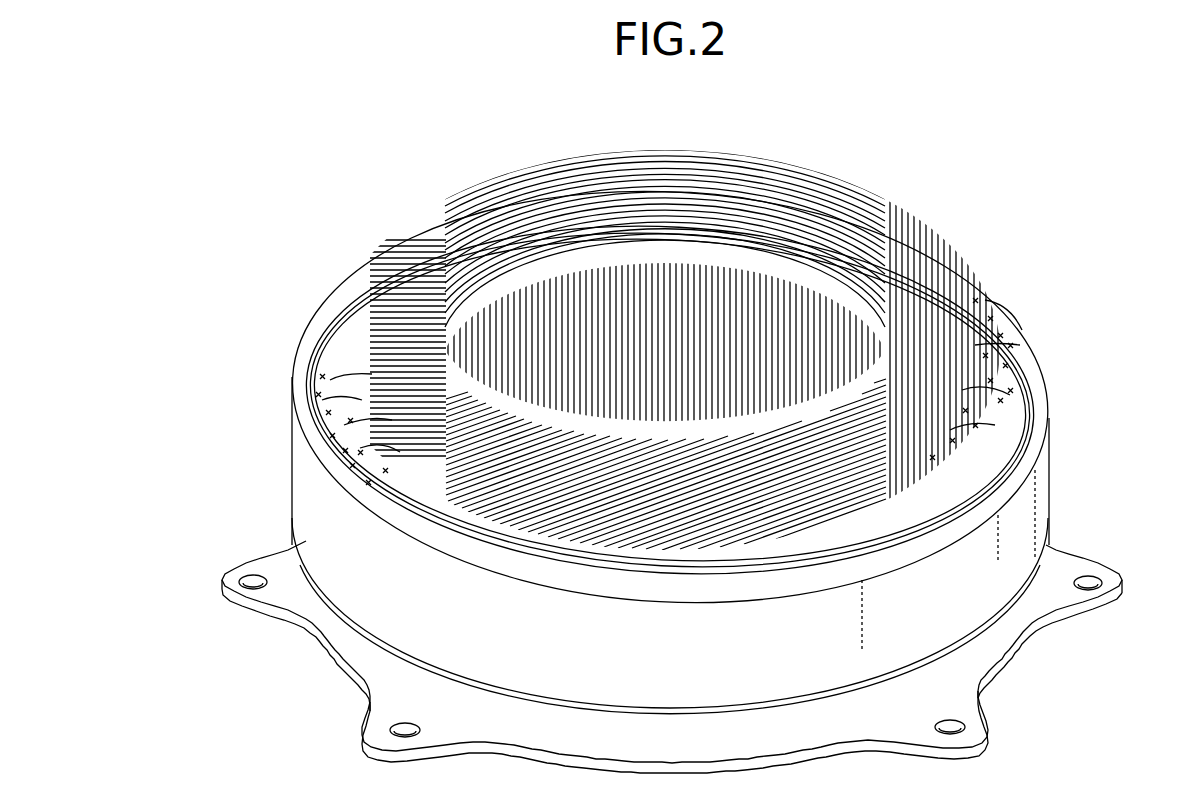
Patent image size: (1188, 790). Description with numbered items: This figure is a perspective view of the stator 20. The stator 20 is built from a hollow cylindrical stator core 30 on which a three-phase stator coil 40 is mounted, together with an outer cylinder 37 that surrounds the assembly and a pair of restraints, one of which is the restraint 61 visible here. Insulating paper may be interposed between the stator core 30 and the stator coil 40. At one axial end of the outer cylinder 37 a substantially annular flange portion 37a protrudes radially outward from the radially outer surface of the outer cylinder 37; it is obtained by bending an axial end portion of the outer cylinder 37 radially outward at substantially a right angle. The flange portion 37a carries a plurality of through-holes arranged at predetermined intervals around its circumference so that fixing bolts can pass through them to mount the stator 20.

The stator 20 is at (998, 193).
The stator core 30 is at (1000, 333).
The stator coil 40 is at (390, 220).
The restraint 61 is at (1042, 384).
The outer cylinder 37 is at (1058, 492).
The flange portion 37a is at (282, 558).